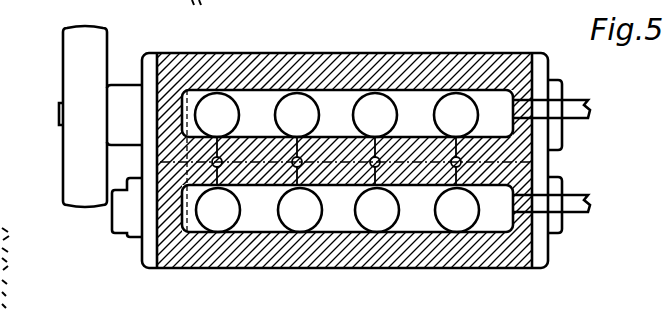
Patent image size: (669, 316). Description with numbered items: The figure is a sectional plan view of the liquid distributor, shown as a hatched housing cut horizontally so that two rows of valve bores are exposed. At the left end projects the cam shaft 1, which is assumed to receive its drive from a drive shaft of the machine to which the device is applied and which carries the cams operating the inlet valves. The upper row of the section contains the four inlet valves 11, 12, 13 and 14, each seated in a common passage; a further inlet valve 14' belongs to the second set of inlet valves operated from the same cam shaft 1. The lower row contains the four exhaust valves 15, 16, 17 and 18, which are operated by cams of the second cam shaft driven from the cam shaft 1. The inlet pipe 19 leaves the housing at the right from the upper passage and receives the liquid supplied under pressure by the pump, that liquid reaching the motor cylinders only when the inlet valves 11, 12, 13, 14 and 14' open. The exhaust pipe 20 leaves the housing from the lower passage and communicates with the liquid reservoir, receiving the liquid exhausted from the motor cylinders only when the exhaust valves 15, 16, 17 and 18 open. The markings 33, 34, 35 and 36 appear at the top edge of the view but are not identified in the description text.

The cam shaft 1 is at (60, 110).
The valve 11 is at (207, 103).
The valve 12 is at (291, 103).
The valve 13 is at (370, 103).
The valve 14 is at (454, 79).
The valve 14' is at (525, 10).
The valve 15 is at (209, 218).
The valve 16 is at (291, 217).
The valve 17 is at (367, 215).
The valve 18 is at (450, 215).
The inlet pipe 19 is at (572, 105).
The exhaust pipe 20 is at (572, 200).
The cylinder 33 is at (225, 0).
The cylinder 34 is at (306, 0).
The cylinder 35 is at (397, 0).
The cylinder 36 is at (483, 0).